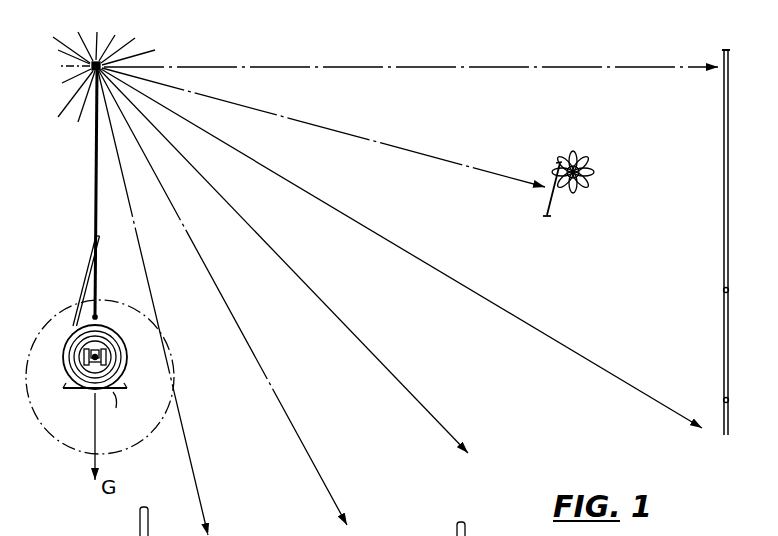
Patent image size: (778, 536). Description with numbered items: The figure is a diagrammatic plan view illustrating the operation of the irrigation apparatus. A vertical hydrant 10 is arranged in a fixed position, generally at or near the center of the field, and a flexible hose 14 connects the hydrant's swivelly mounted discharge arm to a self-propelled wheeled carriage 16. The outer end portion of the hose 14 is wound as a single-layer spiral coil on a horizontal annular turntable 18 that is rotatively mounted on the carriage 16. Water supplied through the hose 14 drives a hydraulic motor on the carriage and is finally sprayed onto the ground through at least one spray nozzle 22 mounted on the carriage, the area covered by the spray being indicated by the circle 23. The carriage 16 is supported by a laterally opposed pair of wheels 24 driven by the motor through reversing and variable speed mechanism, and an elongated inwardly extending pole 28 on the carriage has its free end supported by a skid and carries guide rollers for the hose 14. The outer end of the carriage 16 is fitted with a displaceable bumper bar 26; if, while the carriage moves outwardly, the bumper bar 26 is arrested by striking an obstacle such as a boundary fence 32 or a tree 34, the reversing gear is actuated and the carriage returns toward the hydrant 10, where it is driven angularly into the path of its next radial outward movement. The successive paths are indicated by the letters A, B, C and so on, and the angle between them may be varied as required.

The vertical hydrant 10 is at (108, 53).
The flexible hose 14 is at (93, 212).
The pole 28 is at (86, 284).
The self-propelled wheeled carriage 16 is at (108, 326).
The horizontal annular turntable 18 is at (127, 358).
The wheels 24 is at (93, 360).
The spray nozzle 22 is at (104, 391).
The bumper bar 26 is at (569, 236).
The circle 23 is at (163, 433).
The boundary fence 32 is at (722, 318).
The tree 34 is at (580, 170).